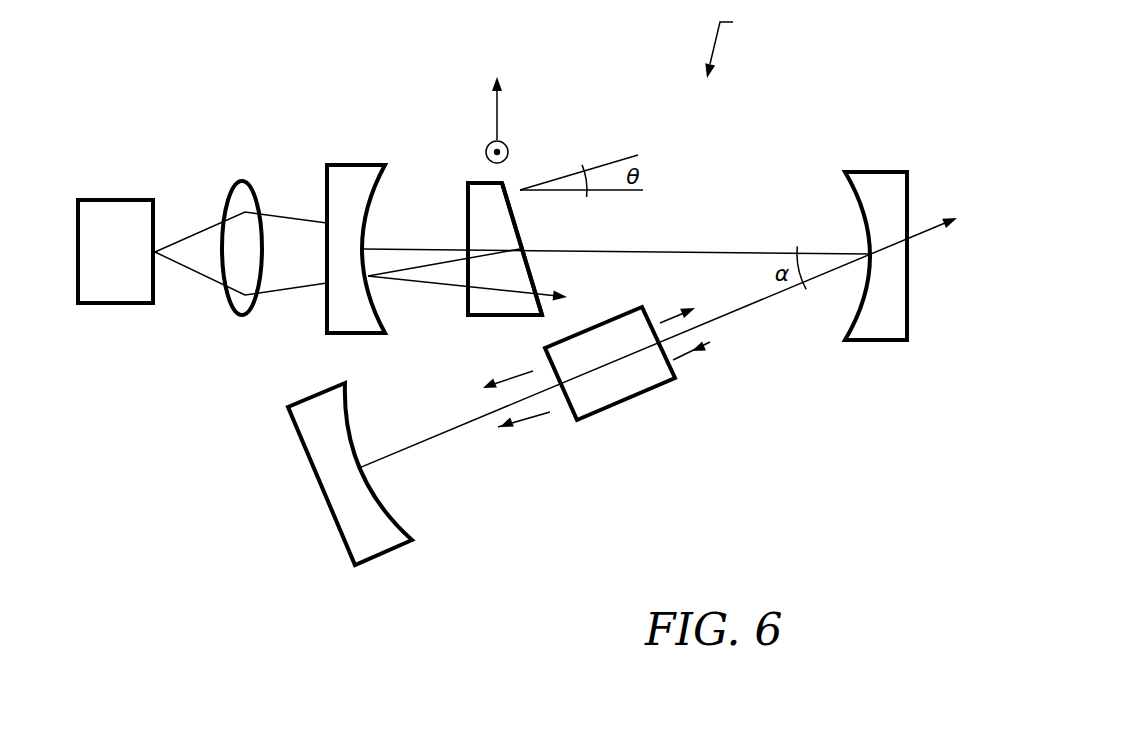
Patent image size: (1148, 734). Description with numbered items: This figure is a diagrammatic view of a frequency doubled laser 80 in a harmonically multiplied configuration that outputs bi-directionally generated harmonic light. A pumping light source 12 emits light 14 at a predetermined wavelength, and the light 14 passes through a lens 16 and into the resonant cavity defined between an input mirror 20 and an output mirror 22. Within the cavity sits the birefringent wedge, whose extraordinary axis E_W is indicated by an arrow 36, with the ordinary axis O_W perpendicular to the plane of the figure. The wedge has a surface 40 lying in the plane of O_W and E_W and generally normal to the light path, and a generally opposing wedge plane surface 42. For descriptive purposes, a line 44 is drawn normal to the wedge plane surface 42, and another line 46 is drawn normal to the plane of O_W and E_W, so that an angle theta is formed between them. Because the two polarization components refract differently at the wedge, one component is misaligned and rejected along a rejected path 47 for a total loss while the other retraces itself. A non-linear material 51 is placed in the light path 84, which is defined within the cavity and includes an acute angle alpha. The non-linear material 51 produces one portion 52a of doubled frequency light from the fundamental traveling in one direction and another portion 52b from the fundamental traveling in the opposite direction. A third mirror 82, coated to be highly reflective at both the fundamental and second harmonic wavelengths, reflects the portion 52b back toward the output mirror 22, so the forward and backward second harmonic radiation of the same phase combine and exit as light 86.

The pumping light source 12 is at (100, 260).
The light 14 is at (228, 225).
The lens 16 is at (233, 312).
The input mirror 20 is at (341, 219).
The output mirror 22 is at (870, 228).
The arrow 36 is at (480, 104).
The surface 40 is at (470, 249).
The wedge plane surface 42 is at (537, 249).
The line 44 is at (584, 148).
The line 46 is at (592, 214).
The rejected path 47 is at (467, 309).
The non-linear material 51 is at (618, 383).
The portion of doubled frequency light 52a is at (722, 356).
The portion of doubled frequency light 52b is at (540, 435).
The laser 80 is at (735, 46).
The third mirror 82 is at (375, 491).
The light path 84 is at (616, 231).
The light 86 is at (672, 343).